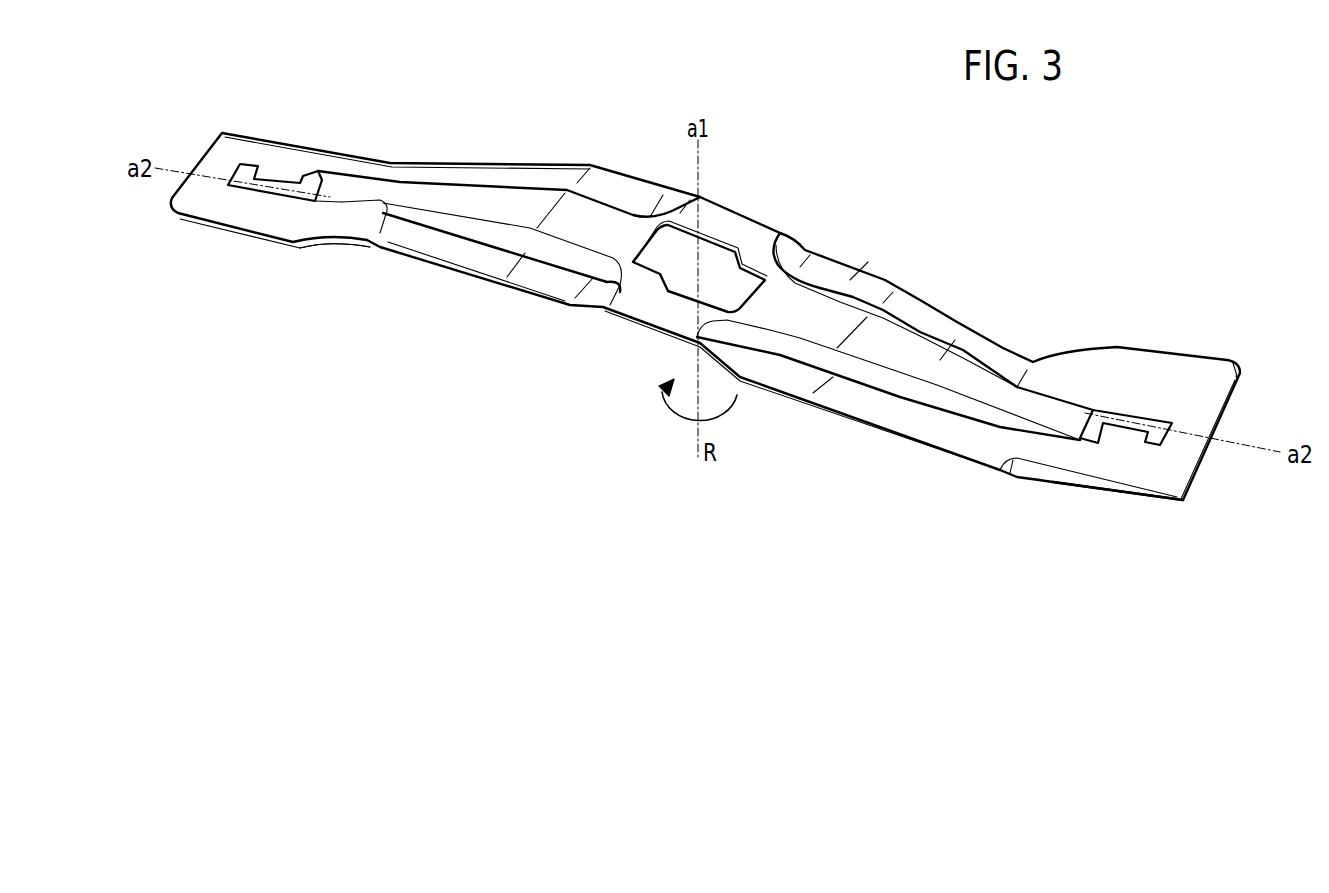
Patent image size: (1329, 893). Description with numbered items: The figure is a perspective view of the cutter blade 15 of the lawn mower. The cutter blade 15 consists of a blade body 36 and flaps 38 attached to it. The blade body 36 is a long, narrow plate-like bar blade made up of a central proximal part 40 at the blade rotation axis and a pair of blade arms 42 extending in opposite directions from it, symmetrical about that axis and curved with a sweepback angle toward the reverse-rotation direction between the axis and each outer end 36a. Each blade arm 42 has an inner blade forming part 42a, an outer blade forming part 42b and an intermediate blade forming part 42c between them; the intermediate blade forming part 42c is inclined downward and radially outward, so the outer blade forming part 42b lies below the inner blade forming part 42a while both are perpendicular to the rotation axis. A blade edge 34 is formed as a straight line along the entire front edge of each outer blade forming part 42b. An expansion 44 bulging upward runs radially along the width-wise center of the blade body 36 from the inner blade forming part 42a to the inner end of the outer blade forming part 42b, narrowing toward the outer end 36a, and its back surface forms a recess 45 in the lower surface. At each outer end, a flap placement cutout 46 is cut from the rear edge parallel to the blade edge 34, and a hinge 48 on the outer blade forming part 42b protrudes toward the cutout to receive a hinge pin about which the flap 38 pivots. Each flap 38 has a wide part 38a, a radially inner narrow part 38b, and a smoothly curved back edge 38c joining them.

The cutter blade 15 is at (884, 114).
The blade edge 34 is at (1127, 487).
The blade body 36 is at (884, 278).
The outer end 36a is at (207, 153).
The flap 38 is at (243, 235).
The wide part 38a is at (210, 208).
The narrow part 38b is at (355, 223).
The back edge 38c is at (350, 247).
The central proximal part 40 is at (747, 230).
The blade arm 42 is at (513, 163).
The inner blade forming part 42a is at (783, 372).
The outer blade forming part 42b is at (1090, 457).
The intermediate blade forming part 42c is at (912, 422).
The expansion 44 is at (445, 198).
The recess 45 is at (473, 207).
The flap placement cutout 46 is at (327, 205).
The hinge 48 is at (272, 186).